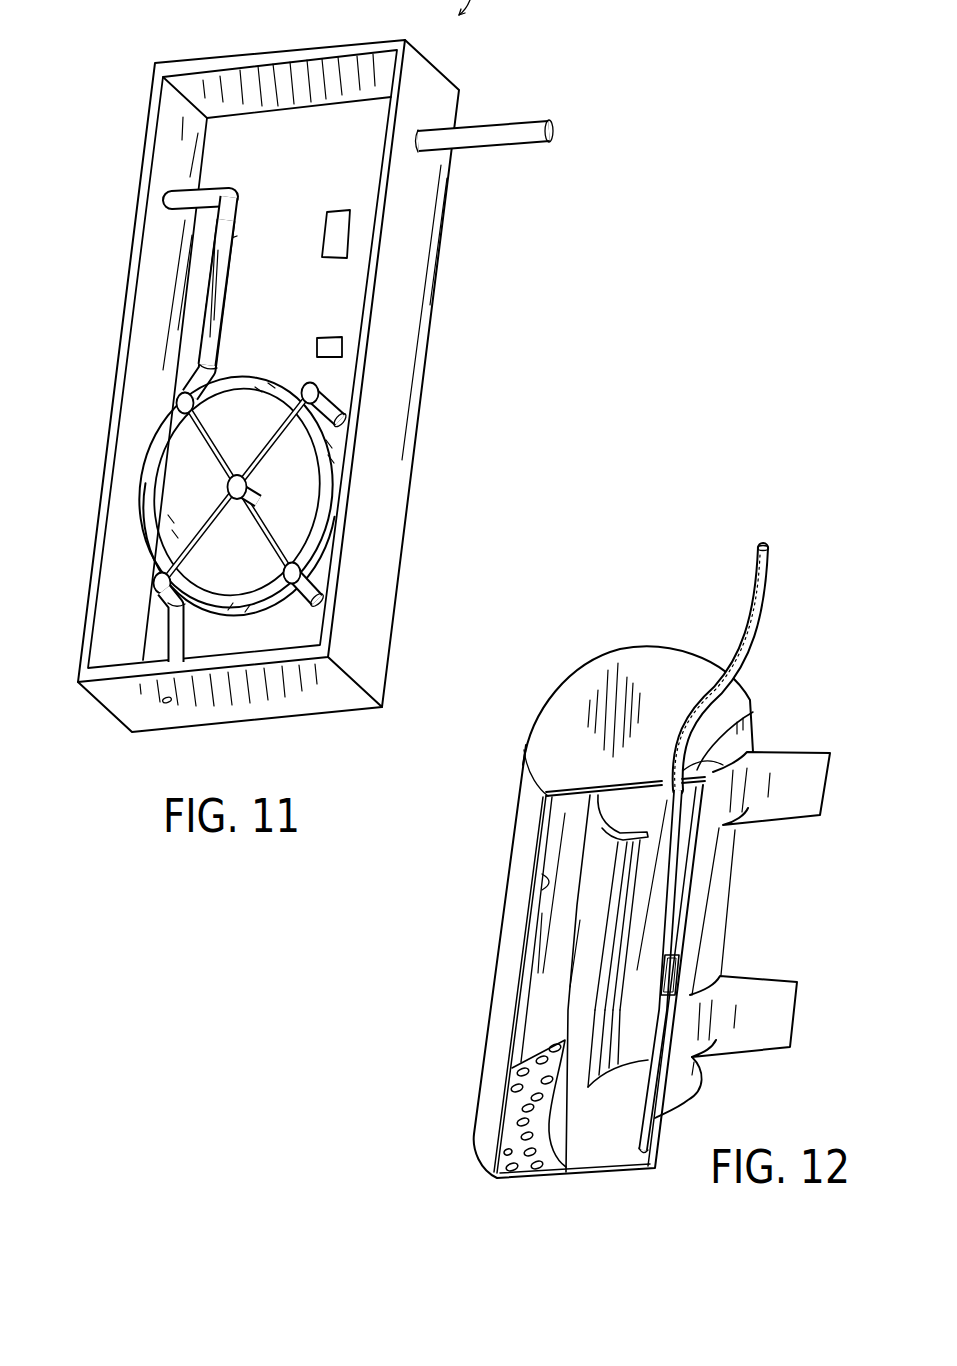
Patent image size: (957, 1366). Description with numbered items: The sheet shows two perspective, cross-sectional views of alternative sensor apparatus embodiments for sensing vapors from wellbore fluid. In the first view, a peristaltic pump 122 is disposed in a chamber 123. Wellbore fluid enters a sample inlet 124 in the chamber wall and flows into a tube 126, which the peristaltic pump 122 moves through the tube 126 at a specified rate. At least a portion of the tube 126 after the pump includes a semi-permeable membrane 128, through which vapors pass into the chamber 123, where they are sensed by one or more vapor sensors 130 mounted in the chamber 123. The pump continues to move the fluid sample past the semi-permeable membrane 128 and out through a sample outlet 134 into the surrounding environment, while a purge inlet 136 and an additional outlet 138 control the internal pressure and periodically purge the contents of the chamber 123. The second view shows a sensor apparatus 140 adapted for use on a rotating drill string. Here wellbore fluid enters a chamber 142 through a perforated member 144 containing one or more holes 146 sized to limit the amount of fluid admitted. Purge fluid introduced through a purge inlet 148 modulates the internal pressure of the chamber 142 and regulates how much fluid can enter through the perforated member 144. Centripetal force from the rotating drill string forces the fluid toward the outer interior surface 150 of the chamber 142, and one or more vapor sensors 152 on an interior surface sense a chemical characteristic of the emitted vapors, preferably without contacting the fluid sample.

In FIG. 11, the peristaltic pump 122 is at (322, 521).
In FIG. 11, the chamber 123 is at (255, 135).
In FIG. 11, the sample inlet 124 is at (170, 706).
In FIG. 11, the tube 126 is at (167, 630).
In FIG. 11, the semi-permeable membrane 128 is at (208, 303).
In FIG. 11, the vapor sensor 130 is at (352, 231).
In FIG. 11, the sample outlet 134 is at (170, 197).
In FIG. 11, the purge inlet 136 is at (527, 118).
In FIG. 11, the additional outlet 138 is at (345, 346).
In FIG. 12, the sensor apparatus 140 is at (870, 536).
In FIG. 12, the chamber 142 is at (562, 942).
In FIG. 12, the perforated member 144 is at (515, 1140).
In FIG. 12, the holes 146 is at (531, 1178).
In FIG. 12, the purge inlet 148 is at (697, 772).
In FIG. 12, the outer interior surface 150 is at (547, 887).
In FIG. 12, the vapor sensors 152 is at (680, 962).